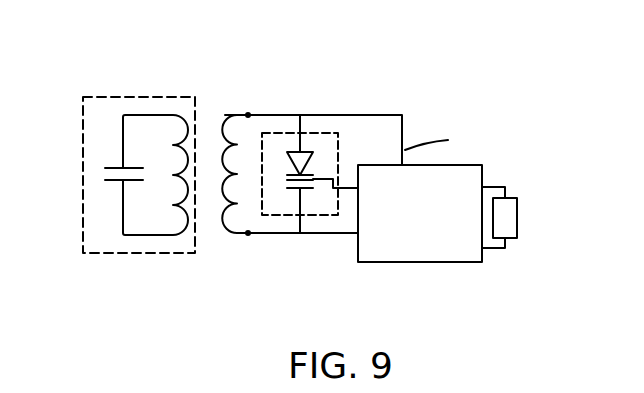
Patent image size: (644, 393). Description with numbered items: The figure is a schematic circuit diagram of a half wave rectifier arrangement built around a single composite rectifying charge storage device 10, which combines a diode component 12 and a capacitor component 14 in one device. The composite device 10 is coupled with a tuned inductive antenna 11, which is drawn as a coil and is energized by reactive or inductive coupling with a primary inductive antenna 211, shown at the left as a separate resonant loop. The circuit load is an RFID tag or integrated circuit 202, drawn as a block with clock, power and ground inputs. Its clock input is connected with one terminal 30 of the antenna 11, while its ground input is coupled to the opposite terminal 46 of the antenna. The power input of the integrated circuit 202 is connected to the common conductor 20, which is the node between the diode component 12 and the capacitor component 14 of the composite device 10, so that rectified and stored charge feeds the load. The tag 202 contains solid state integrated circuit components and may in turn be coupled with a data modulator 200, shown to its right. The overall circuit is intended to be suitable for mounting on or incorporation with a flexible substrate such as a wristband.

The composite rectifying charge storage device 10 is at (320, 133).
The tuned inductive antenna 11 is at (236, 236).
The diode component 12 is at (297, 152).
The capacitor component 14 is at (338, 172).
The common conductor 20 is at (313, 178).
The antenna terminal 30 is at (248, 115).
The opposite antenna terminal 46 is at (248, 236).
The data modulator 200 is at (517, 213).
The integrated circuit 202 is at (423, 262).
The primary inductive antenna 211 is at (108, 252).